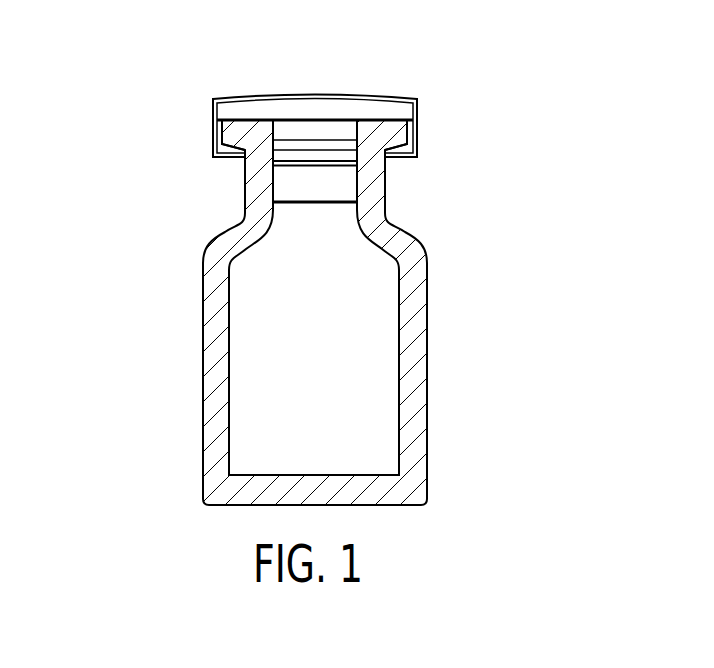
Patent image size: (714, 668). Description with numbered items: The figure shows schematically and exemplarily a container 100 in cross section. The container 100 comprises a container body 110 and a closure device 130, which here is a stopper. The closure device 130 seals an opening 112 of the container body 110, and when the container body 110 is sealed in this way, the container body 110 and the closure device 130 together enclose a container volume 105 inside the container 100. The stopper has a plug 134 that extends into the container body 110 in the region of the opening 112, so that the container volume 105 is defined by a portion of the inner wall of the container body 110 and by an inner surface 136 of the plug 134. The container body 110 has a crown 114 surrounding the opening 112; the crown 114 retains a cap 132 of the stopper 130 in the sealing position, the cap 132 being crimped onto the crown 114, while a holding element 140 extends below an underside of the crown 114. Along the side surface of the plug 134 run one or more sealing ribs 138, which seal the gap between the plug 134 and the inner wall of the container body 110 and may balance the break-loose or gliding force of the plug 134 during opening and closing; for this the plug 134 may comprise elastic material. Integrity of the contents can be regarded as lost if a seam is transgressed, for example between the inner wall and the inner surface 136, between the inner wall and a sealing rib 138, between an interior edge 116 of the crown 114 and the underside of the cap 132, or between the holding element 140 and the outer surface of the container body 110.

The container 100 is at (73, 30).
The container volume 105 is at (258, 398).
The container body 110 is at (215, 434).
The opening 112 is at (300, 108).
The crown 114 is at (217, 143).
The interior edge 116 is at (258, 100).
The closure device 130 is at (360, 155).
The cap 132 is at (214, 99).
The plug 134 is at (323, 132).
The inner surface 136 is at (322, 202).
The sealing ribs 138 is at (337, 157).
The holding element 140 is at (406, 158).